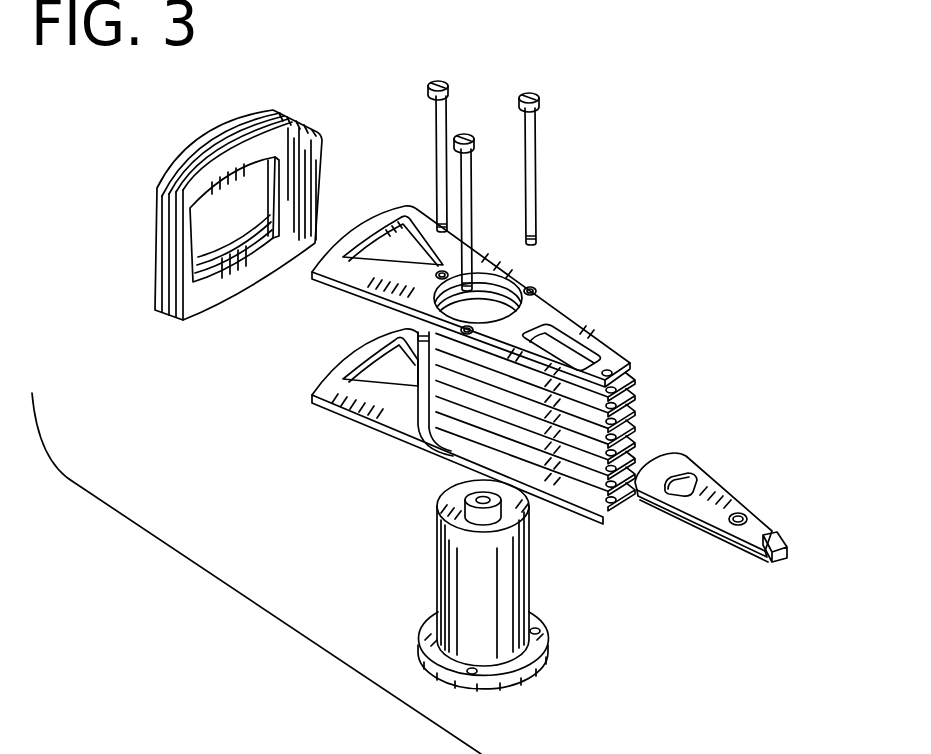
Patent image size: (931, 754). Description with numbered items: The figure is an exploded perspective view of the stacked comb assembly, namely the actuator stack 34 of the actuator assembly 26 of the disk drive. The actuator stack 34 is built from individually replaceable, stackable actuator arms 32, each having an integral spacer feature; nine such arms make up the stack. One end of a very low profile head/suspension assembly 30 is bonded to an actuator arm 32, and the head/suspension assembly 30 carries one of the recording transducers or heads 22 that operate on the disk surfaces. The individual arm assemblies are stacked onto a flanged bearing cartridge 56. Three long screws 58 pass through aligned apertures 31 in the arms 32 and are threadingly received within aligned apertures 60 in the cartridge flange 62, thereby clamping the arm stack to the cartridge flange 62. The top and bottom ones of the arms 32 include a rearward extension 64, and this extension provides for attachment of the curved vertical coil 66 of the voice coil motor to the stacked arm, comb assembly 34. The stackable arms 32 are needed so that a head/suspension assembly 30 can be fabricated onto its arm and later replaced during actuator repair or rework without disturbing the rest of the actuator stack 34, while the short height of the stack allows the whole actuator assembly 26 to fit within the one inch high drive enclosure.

The transducers or heads 22 is at (785, 558).
The actuator assembly 26 is at (660, 145).
The head/suspension assembly 30 is at (727, 475).
The apertures 31 is at (440, 272).
The actuator arm 32 is at (567, 320).
The actuator stack 34 is at (543, 257).
The flanged bearing cartridge 56 is at (518, 593).
The long screws 58 is at (436, 82).
The apertures 60 is at (540, 632).
The cartridge flange 62 is at (421, 643).
The rearward extension 64 is at (340, 278).
The curved vertical coil 66 is at (282, 114).